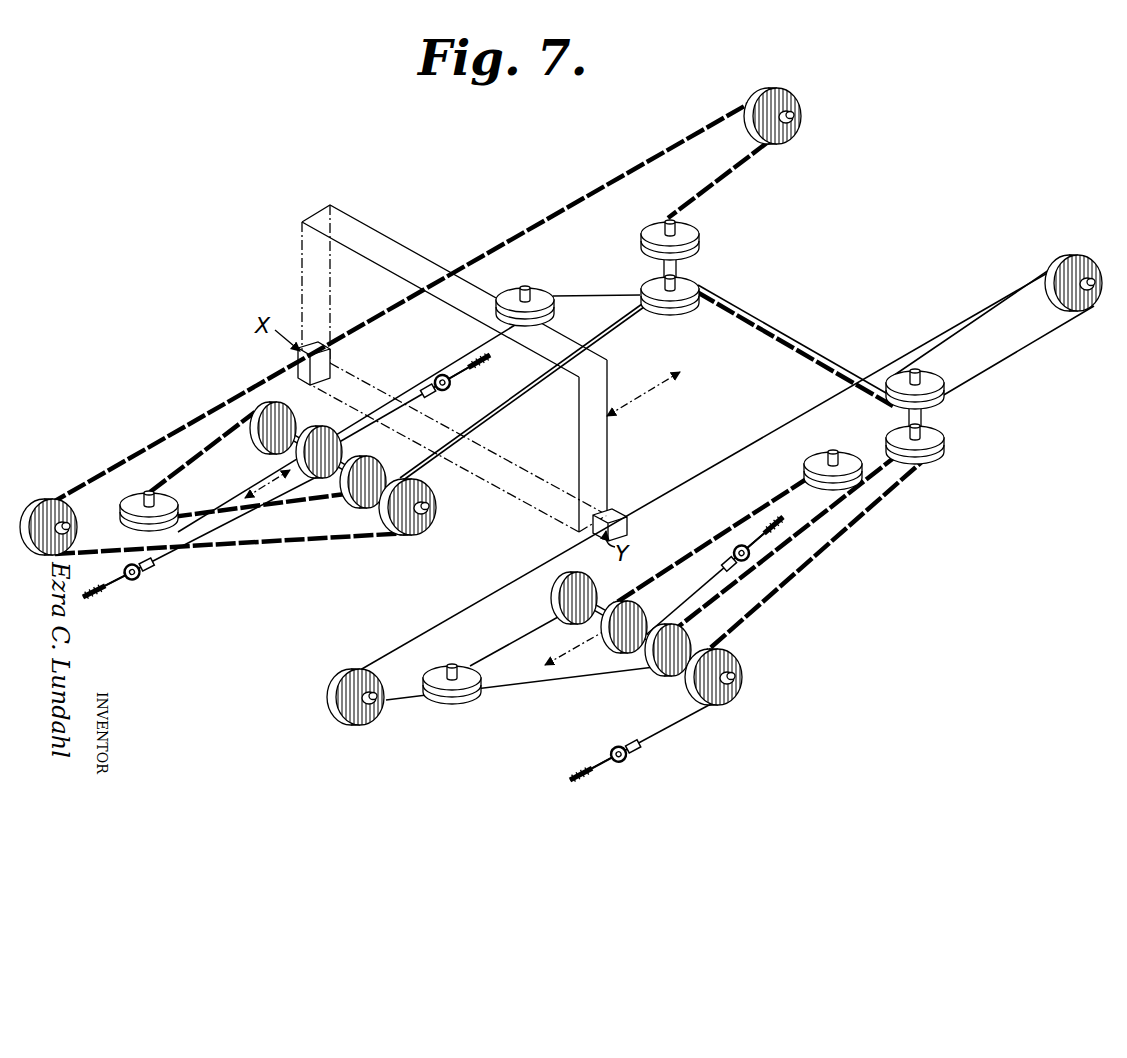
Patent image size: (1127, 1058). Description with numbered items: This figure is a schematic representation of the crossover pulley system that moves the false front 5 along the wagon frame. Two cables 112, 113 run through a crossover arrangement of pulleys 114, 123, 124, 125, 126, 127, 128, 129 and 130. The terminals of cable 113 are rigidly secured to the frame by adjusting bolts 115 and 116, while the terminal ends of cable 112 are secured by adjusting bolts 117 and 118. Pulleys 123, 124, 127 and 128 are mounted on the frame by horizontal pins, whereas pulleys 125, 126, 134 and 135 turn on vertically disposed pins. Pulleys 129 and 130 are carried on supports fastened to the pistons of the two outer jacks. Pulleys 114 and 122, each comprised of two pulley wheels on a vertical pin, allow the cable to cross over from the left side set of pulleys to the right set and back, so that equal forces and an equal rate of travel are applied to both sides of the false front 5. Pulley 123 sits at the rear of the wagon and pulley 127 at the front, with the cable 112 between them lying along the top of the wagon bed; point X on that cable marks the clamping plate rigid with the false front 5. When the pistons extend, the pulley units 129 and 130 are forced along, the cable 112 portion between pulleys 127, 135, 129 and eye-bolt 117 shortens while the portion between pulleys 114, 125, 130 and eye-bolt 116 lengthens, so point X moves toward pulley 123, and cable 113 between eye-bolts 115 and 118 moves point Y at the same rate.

The false front 5 is at (368, 243).
The cable 112 is at (716, 292).
The cable 113 is at (396, 382).
The pulley 114 is at (931, 374).
The adjusting bolt 115 is at (583, 770).
The adjusting bolt 116 is at (775, 530).
The adjusting bolt 117 is at (102, 590).
The adjusting bolt 118 is at (478, 372).
The pulley 122 is at (692, 232).
The pulley 123 is at (803, 104).
The pulley 124 is at (1088, 262).
The pulley 125 is at (852, 438).
The pulley 126 is at (538, 292).
The pulley 127 is at (53, 513).
The pulley 128 is at (357, 722).
The pulley 129 is at (252, 440).
The pulley 130 is at (745, 676).
The pulley 134 is at (450, 700).
The pulley 135 is at (141, 490).